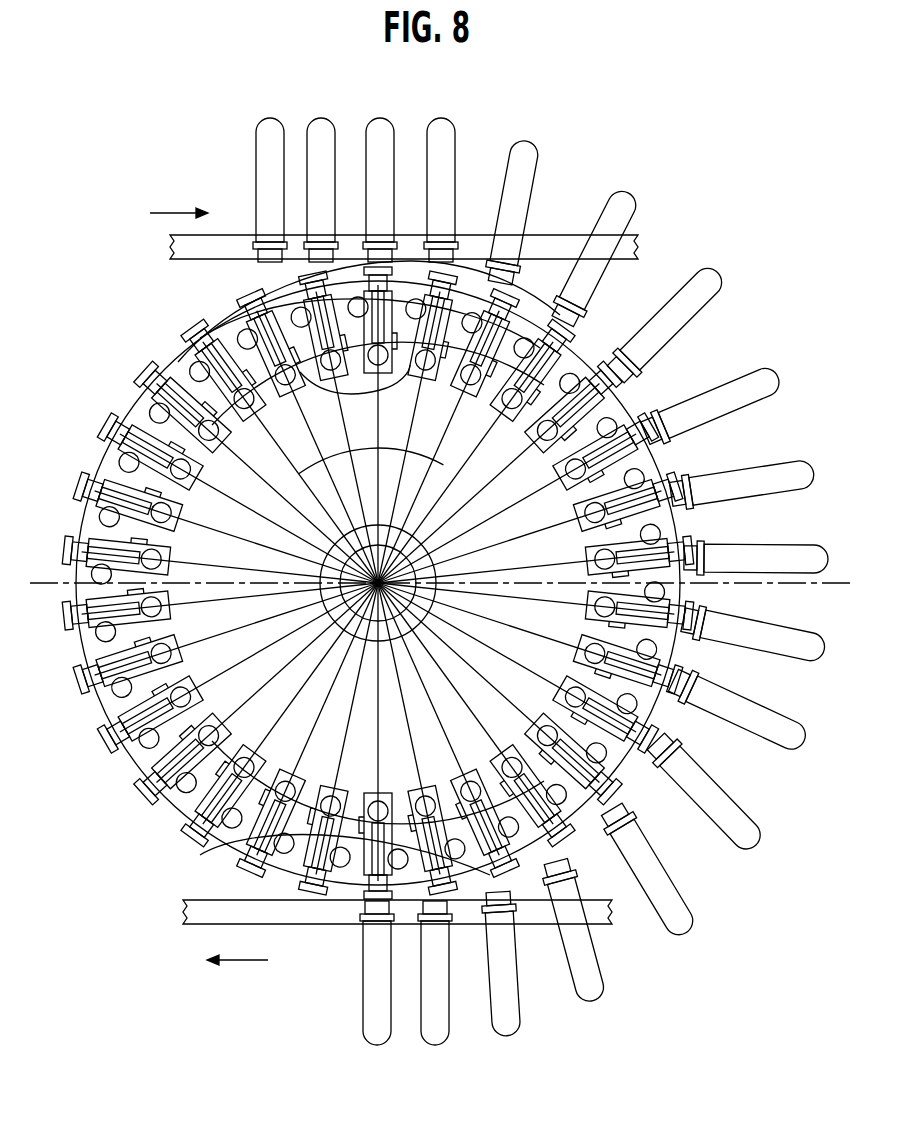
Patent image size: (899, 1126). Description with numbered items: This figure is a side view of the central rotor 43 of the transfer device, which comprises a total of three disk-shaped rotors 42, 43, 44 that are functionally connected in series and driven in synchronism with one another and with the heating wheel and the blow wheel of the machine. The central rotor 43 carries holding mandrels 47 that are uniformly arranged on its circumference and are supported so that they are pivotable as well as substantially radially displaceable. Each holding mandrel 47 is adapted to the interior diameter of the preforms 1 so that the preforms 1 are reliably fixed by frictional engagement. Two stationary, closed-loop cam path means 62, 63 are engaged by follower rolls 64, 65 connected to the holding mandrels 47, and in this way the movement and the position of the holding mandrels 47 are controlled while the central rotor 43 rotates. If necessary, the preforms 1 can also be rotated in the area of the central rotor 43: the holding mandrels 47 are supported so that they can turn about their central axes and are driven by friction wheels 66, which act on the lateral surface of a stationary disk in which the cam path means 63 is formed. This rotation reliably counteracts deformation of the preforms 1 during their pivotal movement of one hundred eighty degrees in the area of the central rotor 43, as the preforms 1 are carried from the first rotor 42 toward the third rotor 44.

The preform 1 is at (443, 132).
The disk-shaped rotor 42 is at (476, 243).
The central rotor 43 is at (503, 445).
The disk-shaped rotor 44 is at (545, 920).
The holding mandrel 47 is at (198, 332).
The cam path means 62 is at (292, 287).
The cam path means 63 is at (395, 906).
The follower roll 64 is at (255, 315).
The follower roll 65 is at (230, 845).
The friction wheel 66 is at (124, 440).